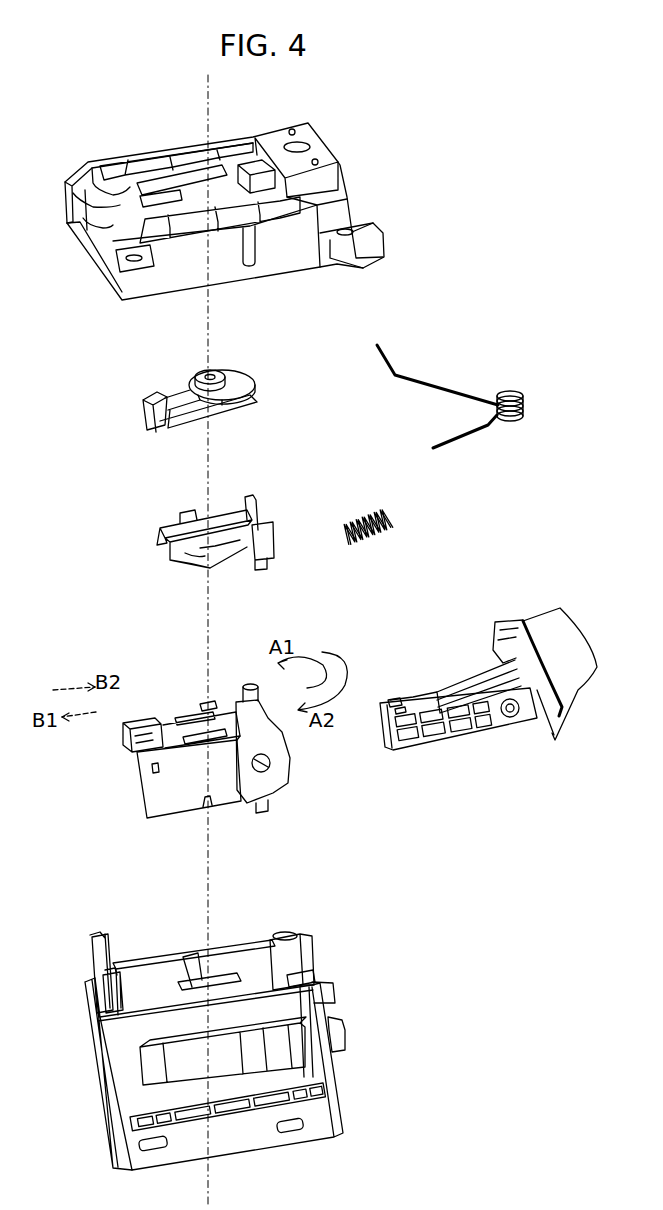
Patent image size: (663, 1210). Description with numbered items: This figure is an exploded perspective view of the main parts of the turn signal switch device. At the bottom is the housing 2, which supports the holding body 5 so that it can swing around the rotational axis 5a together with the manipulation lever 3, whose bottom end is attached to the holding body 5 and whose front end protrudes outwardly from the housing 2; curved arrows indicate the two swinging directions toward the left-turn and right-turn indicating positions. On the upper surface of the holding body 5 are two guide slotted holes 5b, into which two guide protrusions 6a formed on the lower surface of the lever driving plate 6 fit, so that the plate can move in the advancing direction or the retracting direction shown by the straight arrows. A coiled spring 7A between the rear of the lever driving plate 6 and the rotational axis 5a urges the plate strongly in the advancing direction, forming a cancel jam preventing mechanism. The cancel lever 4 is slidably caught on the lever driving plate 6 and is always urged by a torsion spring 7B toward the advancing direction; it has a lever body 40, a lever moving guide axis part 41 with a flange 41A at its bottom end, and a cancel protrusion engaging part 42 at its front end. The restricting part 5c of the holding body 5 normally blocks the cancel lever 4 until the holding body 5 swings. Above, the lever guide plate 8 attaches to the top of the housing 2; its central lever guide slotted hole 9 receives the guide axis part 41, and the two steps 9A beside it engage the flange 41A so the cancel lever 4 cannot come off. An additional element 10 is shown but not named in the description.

The housing 2 is at (130, 1093).
The manipulation lever 3 is at (550, 632).
The cancel lever 4 is at (272, 402).
The lever body 40 is at (184, 394).
The lever moving guide axis part 41 is at (216, 376).
The flange 41A is at (240, 378).
The cancel protrusion engaging part 42 is at (143, 409).
The holding body 5 is at (160, 791).
The rotational axis 5a is at (252, 686).
The guide slotted holes 5b is at (200, 703).
The restricting part 5c is at (122, 746).
The lever driving plate 6 is at (168, 526).
The guide protrusions 6a is at (265, 511).
The coiled spring 7A is at (367, 505).
The torsion spring 7B is at (433, 380).
The lever guide plate 8 is at (242, 144).
The lever guide slotted hole 9 is at (177, 172).
The steps 9A is at (130, 175).
The base side wall 10 is at (84, 234).